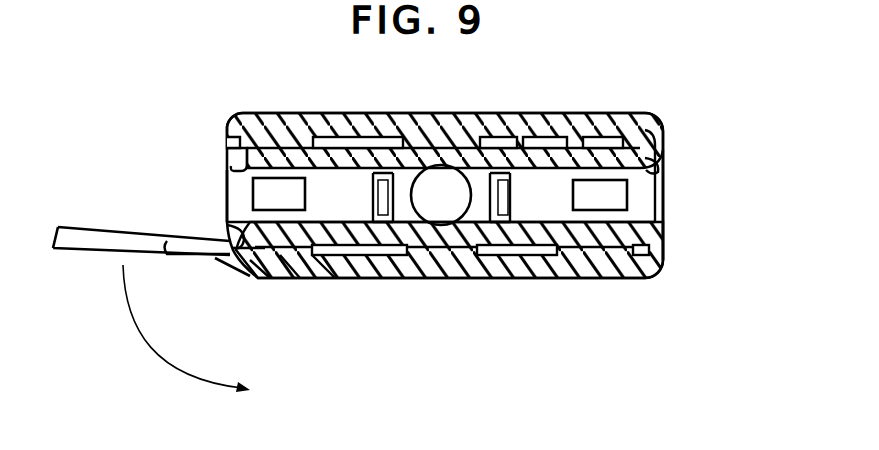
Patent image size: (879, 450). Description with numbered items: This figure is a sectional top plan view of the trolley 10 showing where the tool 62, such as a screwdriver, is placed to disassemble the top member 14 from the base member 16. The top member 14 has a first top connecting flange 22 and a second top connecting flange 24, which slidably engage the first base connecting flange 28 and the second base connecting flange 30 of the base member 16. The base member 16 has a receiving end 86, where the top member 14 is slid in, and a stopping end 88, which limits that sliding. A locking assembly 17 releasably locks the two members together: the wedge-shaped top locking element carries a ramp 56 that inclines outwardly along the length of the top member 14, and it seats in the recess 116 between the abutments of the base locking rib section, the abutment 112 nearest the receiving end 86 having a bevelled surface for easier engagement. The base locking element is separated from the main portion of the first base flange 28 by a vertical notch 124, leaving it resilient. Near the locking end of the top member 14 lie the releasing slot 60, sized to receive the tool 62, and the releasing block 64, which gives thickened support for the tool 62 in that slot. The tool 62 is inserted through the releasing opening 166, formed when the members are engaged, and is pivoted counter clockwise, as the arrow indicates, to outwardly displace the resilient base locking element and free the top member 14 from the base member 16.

The trolley 10 is at (672, 98).
The top member 14 is at (670, 159).
The base member 16 is at (573, 115).
The locking assembly 17 is at (230, 300).
The first top connecting flange 22 is at (557, 252).
The second top connecting flange 24 is at (527, 113).
The first base connecting flange 28 is at (537, 252).
The second base connecting flange 30 is at (392, 113).
The ramp 56 is at (232, 192).
The releasing slot 60 is at (228, 236).
The tool 62 is at (78, 227).
The releasing block 64 is at (232, 246).
The receiving end 86 is at (222, 130).
The stopping end 88 is at (670, 136).
The abutment 112 is at (256, 262).
The recess 116 is at (289, 262).
The vertical notch 124 is at (326, 272).
The releasing opening 166 is at (212, 268).